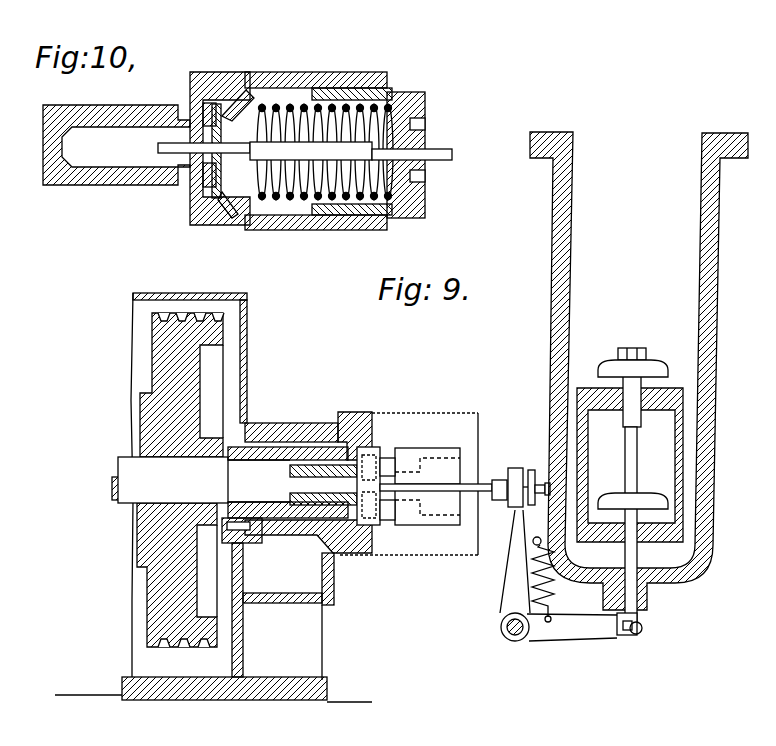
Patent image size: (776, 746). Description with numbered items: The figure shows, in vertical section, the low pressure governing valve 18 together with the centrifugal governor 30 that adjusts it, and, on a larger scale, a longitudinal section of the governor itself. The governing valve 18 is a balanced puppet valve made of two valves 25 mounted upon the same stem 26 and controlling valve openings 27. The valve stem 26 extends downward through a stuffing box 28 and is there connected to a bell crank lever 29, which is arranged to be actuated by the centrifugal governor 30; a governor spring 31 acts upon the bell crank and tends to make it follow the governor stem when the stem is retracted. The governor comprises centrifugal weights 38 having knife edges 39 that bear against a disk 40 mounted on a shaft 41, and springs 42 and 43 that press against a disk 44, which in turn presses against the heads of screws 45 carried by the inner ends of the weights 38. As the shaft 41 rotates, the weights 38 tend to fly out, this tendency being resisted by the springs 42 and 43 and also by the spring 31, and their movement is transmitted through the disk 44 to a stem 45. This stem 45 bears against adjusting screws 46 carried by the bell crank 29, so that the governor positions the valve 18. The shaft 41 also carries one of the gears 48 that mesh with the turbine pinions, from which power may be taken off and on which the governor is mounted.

In FIG. 9, the low pressure governing valve 18 is at (645, 371).
In FIG. 9, the valves 25 is at (651, 363).
In FIG. 9, the valve stem 26 is at (636, 448).
In FIG. 9, the valve openings 27 is at (612, 405).
In FIG. 9, the stuffing box 28 is at (643, 608).
In FIG. 9, the bell crank lever 29 is at (507, 571).
In FIG. 9, the centrifugal governor 30 is at (433, 415).
In FIG. 9, the governor spring 31 is at (553, 596).
In FIG. 10, the centrifugal weights 38 is at (296, 76).
In FIG. 9, the centrifugal weights 38 is at (418, 452).
In FIG. 10, the knife edges 39 is at (229, 94).
In FIG. 9, the knife edges 39 is at (390, 455).
In FIG. 10, the disk 40 is at (216, 75).
In FIG. 9, the disk 40 is at (362, 440).
In FIG. 10, the shaft 41 is at (90, 186).
In FIG. 9, the shaft 41 is at (125, 466).
In FIG. 10, the spring 42 is at (393, 97).
In FIG. 10, the spring 43 is at (428, 140).
In FIG. 10, the disk 44 is at (214, 196).
In FIG. 10, the stem / screws 45 is at (205, 112).
In FIG. 9, the stem / screws 45 is at (483, 485).
In FIG. 9, the adjusting screws 46 is at (503, 500).
In FIG. 9, the gears 48 is at (157, 366).